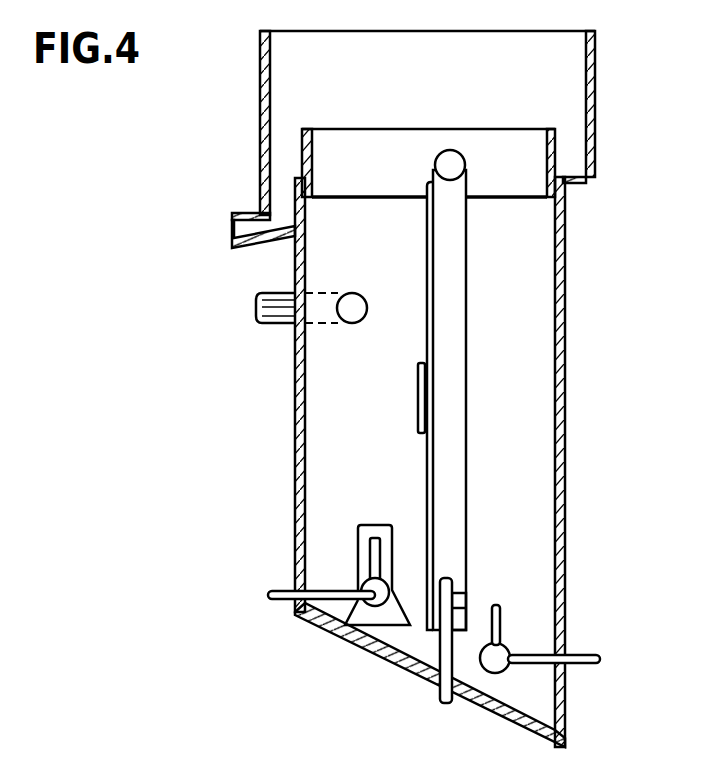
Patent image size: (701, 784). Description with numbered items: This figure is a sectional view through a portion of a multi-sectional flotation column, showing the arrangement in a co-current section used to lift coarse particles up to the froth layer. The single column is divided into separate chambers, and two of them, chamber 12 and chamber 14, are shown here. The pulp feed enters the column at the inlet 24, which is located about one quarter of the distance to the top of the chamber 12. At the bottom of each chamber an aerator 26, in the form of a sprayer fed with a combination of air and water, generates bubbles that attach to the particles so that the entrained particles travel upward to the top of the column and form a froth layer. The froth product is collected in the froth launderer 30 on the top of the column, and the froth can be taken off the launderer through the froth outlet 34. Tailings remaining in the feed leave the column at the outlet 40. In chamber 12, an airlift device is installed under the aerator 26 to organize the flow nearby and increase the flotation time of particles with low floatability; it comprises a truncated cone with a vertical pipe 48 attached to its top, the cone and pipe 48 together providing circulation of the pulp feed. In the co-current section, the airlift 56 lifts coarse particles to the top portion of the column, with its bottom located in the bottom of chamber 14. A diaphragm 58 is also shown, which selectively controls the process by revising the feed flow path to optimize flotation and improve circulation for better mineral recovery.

The chamber 12 is at (332, 451).
The chamber 14 is at (540, 313).
The inlet 24 is at (280, 325).
The aerator 26 is at (285, 587).
The froth launderer 30 is at (575, 143).
The froth outlet 34 is at (250, 214).
The outlet 40 is at (342, 624).
The vertical pipe 48 is at (358, 547).
The airlift 56 is at (440, 650).
The diaphragm 58 is at (418, 395).